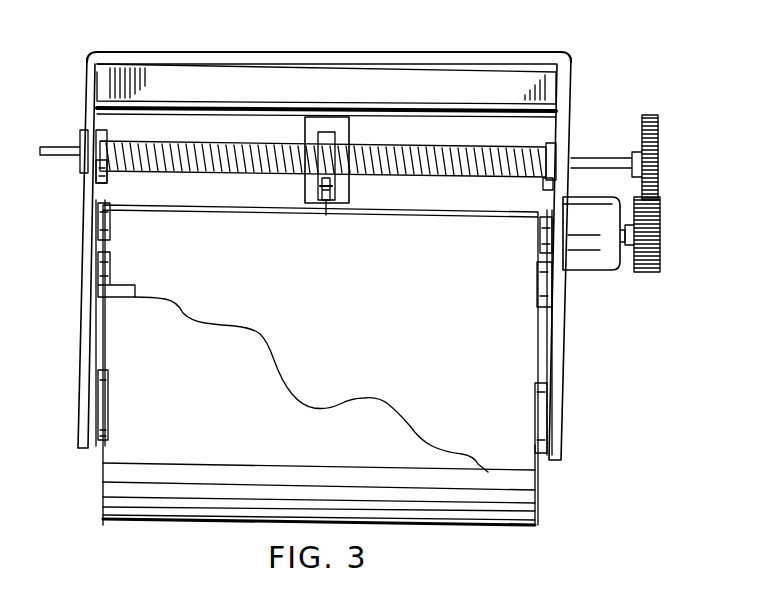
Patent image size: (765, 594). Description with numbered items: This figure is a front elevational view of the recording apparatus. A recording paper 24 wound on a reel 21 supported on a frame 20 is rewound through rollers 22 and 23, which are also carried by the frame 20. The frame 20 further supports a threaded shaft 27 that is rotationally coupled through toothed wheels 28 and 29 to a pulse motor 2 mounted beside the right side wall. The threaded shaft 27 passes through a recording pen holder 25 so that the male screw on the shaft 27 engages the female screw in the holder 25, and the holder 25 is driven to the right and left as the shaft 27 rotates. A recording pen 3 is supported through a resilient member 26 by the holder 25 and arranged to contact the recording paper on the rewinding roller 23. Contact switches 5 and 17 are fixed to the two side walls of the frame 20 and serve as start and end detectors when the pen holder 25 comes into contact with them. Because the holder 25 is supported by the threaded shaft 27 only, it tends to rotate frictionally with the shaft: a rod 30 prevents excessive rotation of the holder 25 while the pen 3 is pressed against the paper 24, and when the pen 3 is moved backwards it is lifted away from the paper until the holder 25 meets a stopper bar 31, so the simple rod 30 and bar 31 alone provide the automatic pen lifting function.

The pulse motor 2 is at (602, 267).
The recording pen 3 is at (318, 189).
The contact switch 5 is at (548, 180).
The contact switch 17 is at (97, 173).
The frame 20 is at (84, 349).
The reel 21 is at (98, 409).
The roller 22 is at (98, 267).
The rewinding roller 23 is at (98, 214).
The recording paper 24 is at (104, 456).
The recording pen holder 25 is at (349, 130).
The resilient member 26 is at (338, 185).
The threaded shaft 27 is at (220, 164).
The toothed wheel 28 is at (658, 142).
The toothed wheel 29 is at (658, 228).
The rod 30 is at (214, 112).
The stopper bar 31 is at (361, 82).